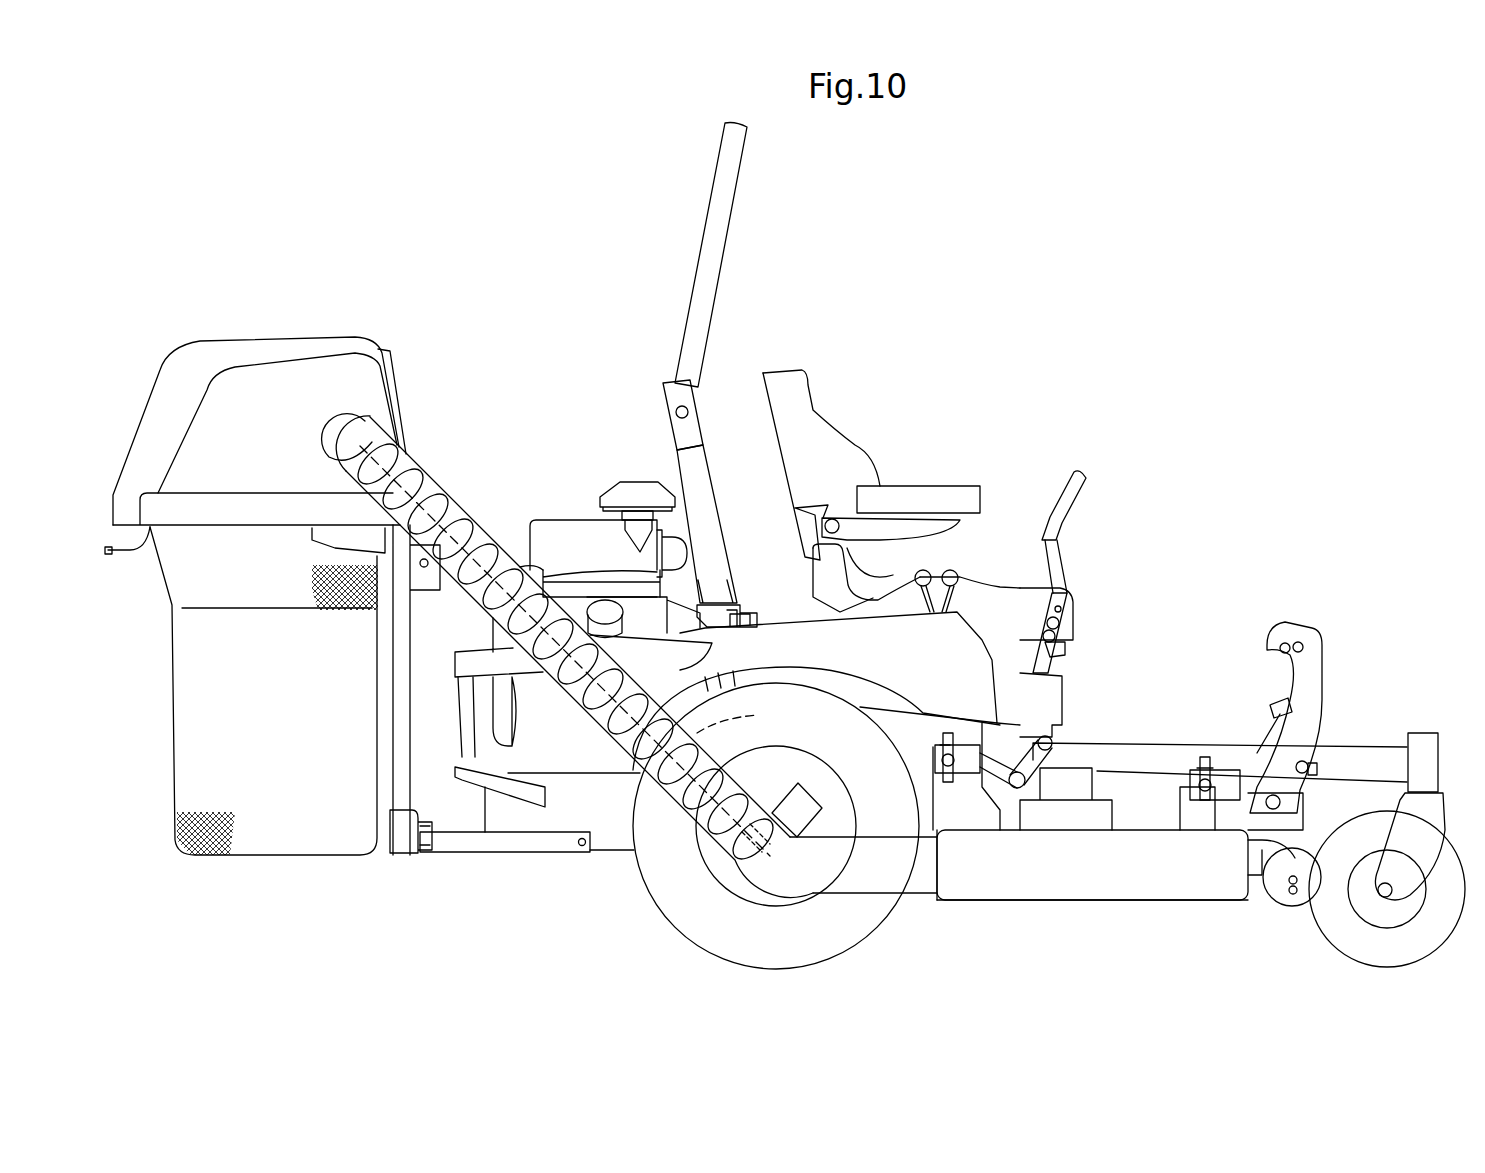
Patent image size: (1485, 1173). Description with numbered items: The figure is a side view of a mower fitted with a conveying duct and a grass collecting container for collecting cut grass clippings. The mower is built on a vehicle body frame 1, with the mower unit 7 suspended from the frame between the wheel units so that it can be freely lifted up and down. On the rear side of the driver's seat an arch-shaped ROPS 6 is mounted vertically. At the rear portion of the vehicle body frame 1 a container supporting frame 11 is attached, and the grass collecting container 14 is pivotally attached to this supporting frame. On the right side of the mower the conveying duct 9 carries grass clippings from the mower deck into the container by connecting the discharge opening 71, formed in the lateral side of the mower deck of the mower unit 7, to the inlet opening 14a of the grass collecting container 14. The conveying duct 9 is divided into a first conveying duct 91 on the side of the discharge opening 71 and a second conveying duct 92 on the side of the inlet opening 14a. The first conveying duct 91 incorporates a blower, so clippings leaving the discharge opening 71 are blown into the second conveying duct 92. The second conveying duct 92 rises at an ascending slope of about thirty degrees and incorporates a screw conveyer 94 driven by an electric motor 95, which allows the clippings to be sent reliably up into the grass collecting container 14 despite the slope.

The grass collecting container 14 is at (265, 338).
The inlet opening 14a is at (320, 445).
The ROPS 6 is at (698, 255).
The container supporting frame 11 is at (487, 850).
The vehicle body frame 1 is at (575, 808).
The second conveying duct 92 is at (682, 805).
The screw conveyer 94 is at (736, 717).
The electric motor 95 is at (797, 812).
The conveying duct 9 is at (757, 880).
The first conveying duct 91 is at (873, 867).
The discharge opening 71 is at (1033, 878).
The mower unit 7 is at (1079, 903).